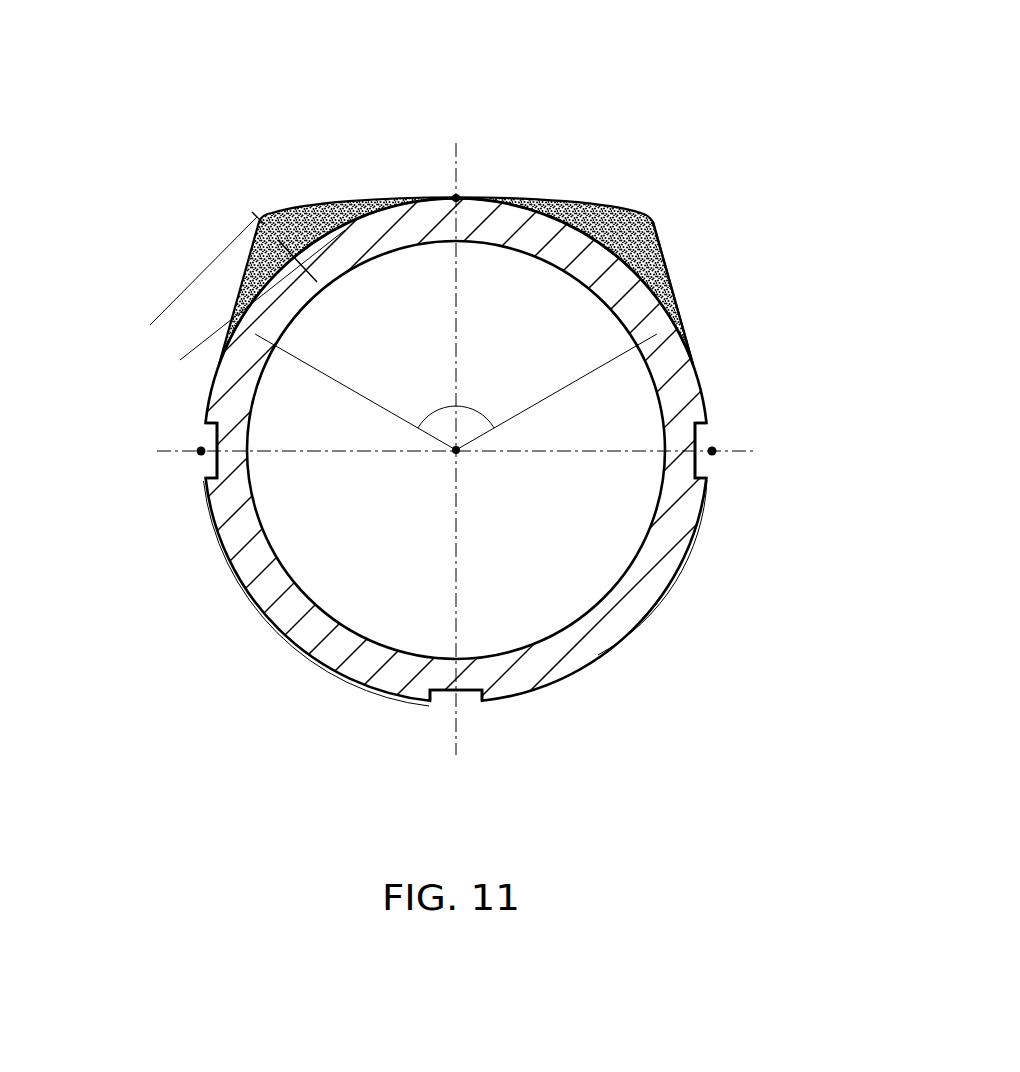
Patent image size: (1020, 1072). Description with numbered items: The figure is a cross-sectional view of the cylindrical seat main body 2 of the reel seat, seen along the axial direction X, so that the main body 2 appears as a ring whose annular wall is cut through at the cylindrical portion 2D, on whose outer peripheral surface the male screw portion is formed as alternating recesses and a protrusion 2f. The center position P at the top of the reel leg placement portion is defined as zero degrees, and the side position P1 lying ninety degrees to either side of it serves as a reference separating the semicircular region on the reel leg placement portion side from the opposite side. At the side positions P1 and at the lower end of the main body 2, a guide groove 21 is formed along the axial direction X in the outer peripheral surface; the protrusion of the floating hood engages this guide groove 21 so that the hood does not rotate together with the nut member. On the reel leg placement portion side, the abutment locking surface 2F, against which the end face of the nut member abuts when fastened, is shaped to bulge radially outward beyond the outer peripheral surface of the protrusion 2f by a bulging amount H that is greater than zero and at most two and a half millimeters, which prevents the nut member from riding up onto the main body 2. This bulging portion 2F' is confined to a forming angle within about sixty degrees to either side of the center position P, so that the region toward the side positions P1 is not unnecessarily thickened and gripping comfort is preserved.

The seat main body 2 is at (631, 118).
The abutment locking surface 2F is at (473, 261).
The bulging portion 2F' is at (473, 261).
The protrusion 2f is at (672, 278).
The cylindrical portion 2D is at (592, 640).
The guide groove 21 is at (213, 476).
The axial direction X is at (468, 466).
The center position P is at (457, 195).
The side position P1 is at (201, 446).
The bulging amount H is at (167, 313).